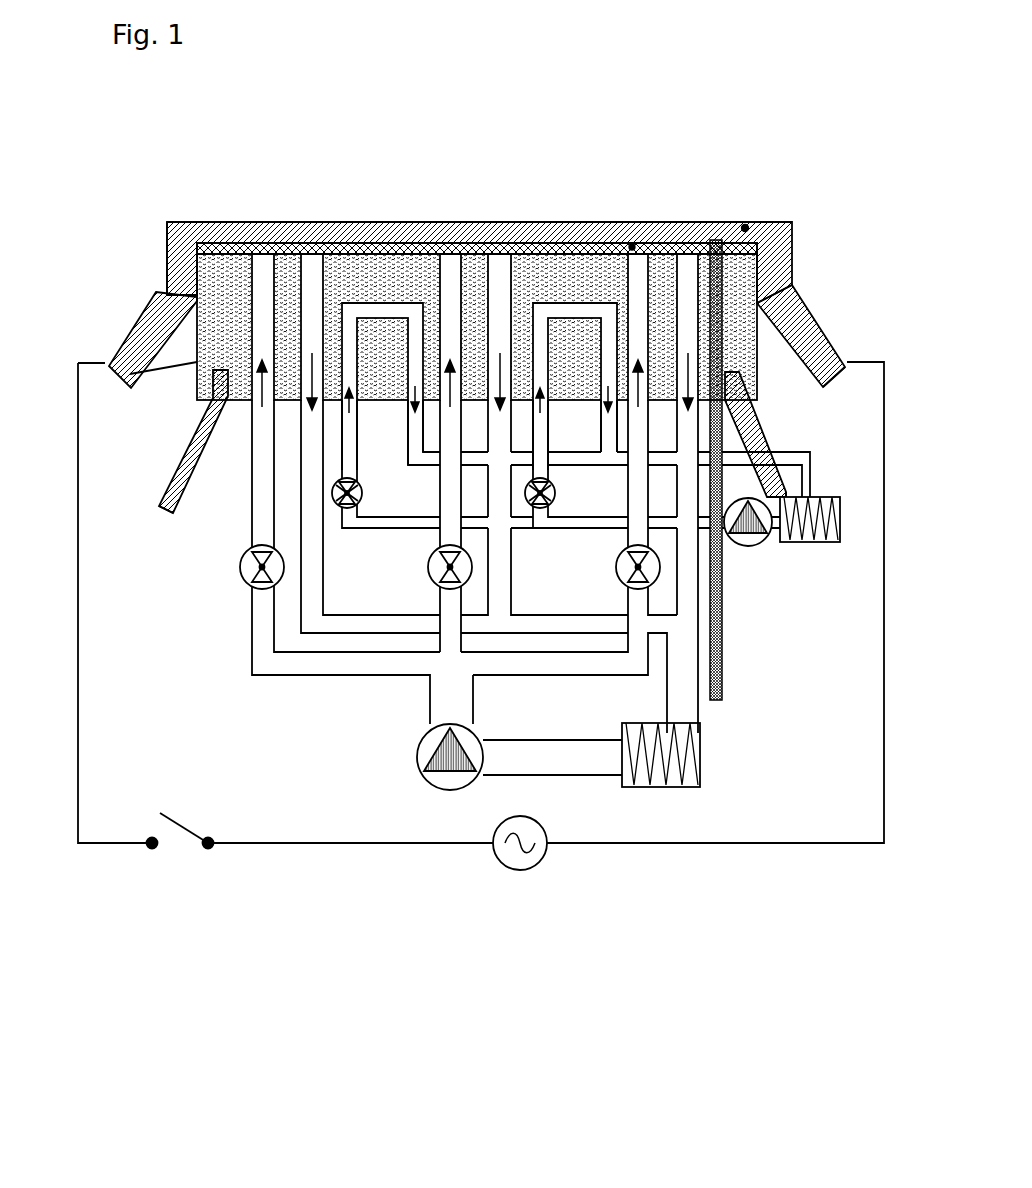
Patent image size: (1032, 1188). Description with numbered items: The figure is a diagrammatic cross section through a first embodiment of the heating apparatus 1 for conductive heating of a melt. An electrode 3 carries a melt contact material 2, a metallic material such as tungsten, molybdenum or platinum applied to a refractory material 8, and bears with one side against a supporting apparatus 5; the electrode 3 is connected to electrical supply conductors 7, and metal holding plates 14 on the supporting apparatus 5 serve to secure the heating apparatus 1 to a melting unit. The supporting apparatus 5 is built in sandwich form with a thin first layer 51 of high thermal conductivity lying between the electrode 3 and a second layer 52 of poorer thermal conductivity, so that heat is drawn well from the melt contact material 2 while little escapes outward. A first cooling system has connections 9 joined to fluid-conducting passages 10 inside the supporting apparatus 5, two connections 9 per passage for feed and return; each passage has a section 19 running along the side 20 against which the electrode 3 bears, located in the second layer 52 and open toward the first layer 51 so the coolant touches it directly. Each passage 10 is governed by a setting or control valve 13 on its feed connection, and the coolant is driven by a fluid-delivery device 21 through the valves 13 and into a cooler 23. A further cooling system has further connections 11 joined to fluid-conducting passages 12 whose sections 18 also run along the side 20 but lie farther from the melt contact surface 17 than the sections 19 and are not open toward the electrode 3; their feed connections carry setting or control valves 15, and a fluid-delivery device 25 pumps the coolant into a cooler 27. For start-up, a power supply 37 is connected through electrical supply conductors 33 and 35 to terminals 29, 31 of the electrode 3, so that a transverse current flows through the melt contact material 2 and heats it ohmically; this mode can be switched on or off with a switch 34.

The heating apparatus 1 is at (258, 912).
The melt contact material 2 is at (745, 228).
The electrode 3 is at (166, 224).
The supporting apparatus 5 is at (757, 333).
The electrical supply conductors 7 is at (726, 699).
The refractory material 8 is at (632, 247).
The connections 9 is at (252, 416).
The fluid-conducting passages 10 is at (263, 315).
The further connections 11 is at (408, 445).
The fluid-conducting passages 12 is at (447, 273).
The setting or control valve 13 is at (430, 578).
The metal holding plates 14 is at (170, 511).
The setting or control valve 15 is at (358, 504).
The melt contact surface 17 is at (597, 222).
The section 18 is at (383, 308).
The section 19 is at (277, 262).
The side 20 is at (215, 222).
The fluid-delivery device 21 is at (417, 757).
The cooler 23 is at (700, 778).
The fluid-delivery device 25 is at (752, 546).
The cooler 27 is at (827, 543).
The terminal 29 is at (838, 340).
The terminal 31 is at (126, 337).
The electrical supply conductor 33 is at (710, 843).
The switch 34 is at (180, 822).
The electrical supply conductor 35 is at (325, 845).
The power supply 37 is at (548, 855).
The first layer 51 is at (167, 238).
The second layer 52 is at (108, 365).